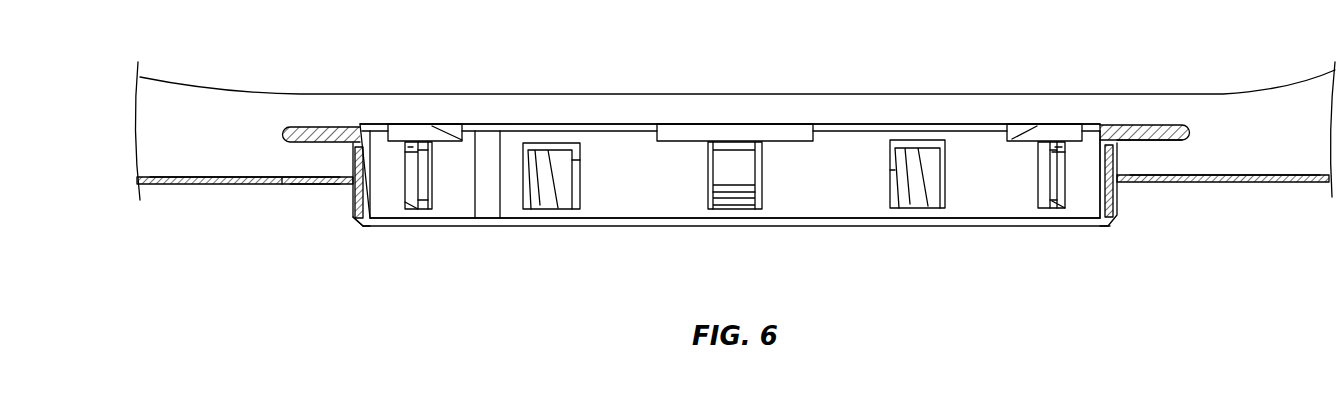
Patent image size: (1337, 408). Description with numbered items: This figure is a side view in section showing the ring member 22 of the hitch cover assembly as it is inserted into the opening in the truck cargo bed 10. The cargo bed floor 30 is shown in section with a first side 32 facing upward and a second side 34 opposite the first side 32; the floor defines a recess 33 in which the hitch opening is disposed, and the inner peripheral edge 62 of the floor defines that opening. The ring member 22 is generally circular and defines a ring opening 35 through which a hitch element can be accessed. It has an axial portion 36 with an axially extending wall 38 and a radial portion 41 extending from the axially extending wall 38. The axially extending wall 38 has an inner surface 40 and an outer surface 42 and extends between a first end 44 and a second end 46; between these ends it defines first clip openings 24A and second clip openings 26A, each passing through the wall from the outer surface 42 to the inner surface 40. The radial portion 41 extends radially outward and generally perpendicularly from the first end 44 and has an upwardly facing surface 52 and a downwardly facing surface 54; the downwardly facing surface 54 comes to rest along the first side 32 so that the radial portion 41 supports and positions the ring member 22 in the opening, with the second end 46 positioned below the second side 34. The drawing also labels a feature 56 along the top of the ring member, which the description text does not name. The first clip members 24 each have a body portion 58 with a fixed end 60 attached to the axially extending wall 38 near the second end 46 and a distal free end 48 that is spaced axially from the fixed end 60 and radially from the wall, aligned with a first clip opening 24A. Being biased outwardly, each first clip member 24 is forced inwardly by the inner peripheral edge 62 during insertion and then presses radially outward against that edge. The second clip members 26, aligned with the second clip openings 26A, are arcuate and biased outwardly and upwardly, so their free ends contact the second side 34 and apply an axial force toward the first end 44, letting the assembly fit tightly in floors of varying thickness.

The cargo bed 10 is at (1200, 184).
The ring member 22 is at (835, 122).
The first clip member 24 is at (354, 162).
The first clip opening 24A is at (372, 182).
The second clip member 26 is at (424, 166).
The second clip opening 26A is at (428, 182).
The cargo bed floor 30 is at (232, 187).
The first side 32 is at (197, 177).
The recess 33 is at (1245, 174).
The second side 34 is at (312, 186).
The ring opening 35 is at (487, 147).
The axial portion 36 is at (507, 147).
The axially extending wall 38 is at (372, 180).
The inner surface 40 is at (1100, 200).
The radial portion 41 is at (1152, 124).
The outer surface 42 is at (1125, 124).
The first end 44 is at (990, 126).
The second end 46 is at (945, 226).
The distal free end 48 is at (359, 146).
The upwardly facing surface 52 is at (305, 127).
The downwardly facing surface 54 is at (292, 150).
The tab 56 is at (404, 135).
The body portion 58 is at (351, 210).
The fixed end 60 is at (360, 230).
The inner peripheral edge 62 is at (1115, 200).